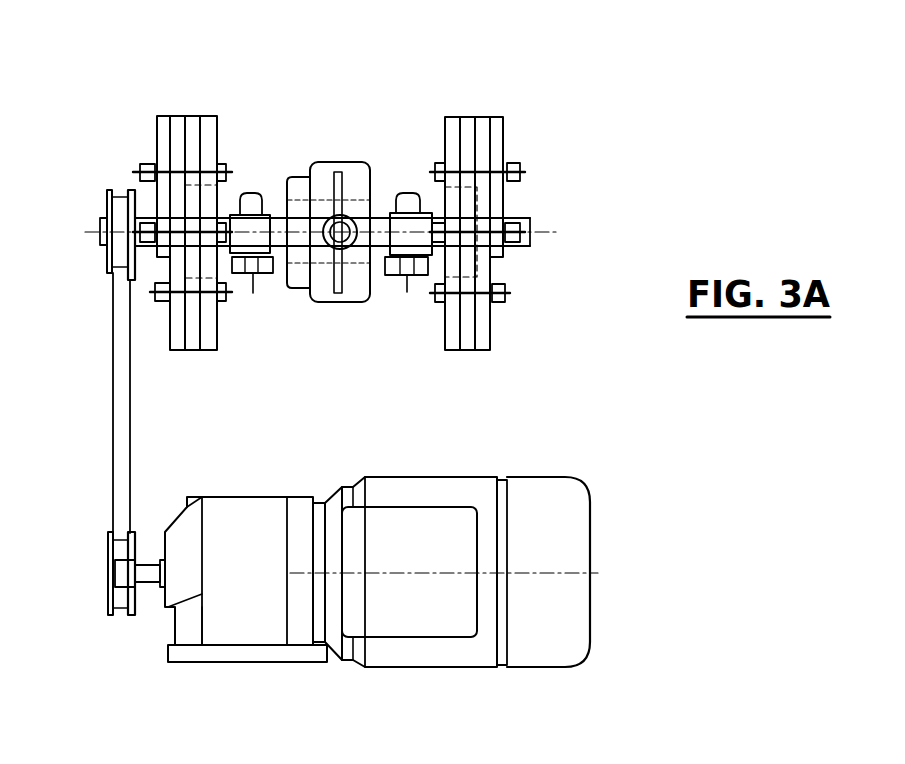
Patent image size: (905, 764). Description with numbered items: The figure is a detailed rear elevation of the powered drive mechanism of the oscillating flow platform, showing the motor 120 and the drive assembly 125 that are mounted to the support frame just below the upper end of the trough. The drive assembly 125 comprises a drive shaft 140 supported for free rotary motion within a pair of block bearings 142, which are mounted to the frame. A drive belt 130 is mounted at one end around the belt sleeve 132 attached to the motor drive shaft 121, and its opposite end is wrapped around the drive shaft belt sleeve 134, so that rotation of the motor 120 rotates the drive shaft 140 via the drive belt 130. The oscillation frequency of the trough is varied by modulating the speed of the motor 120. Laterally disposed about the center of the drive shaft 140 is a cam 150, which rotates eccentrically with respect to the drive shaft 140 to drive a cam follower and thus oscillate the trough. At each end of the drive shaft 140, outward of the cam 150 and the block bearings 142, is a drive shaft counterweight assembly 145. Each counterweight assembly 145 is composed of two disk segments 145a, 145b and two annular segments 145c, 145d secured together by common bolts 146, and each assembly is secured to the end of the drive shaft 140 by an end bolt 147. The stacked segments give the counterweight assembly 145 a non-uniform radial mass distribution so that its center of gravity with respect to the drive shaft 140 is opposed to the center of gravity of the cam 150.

The motor 120 is at (570, 537).
The motor drive shaft 121 is at (152, 592).
The drive assembly 125 is at (632, 260).
The drive belt 130 is at (137, 427).
The belt sleeve 132 is at (120, 548).
The drive shaft belt sleeve 134 is at (118, 185).
The drive shaft 140 is at (380, 252).
The block bearings 142 is at (250, 280).
The drive shaft counterweight assembly 145 is at (356, 381).
The disk segment 145a is at (208, 108).
The disk segment 145b is at (192, 108).
The annular segment 145c is at (175, 108).
The annular segment 145d is at (163, 108).
The common bolts 146 is at (527, 158).
The end bolt 147 is at (530, 240).
The cam 150 is at (325, 155).